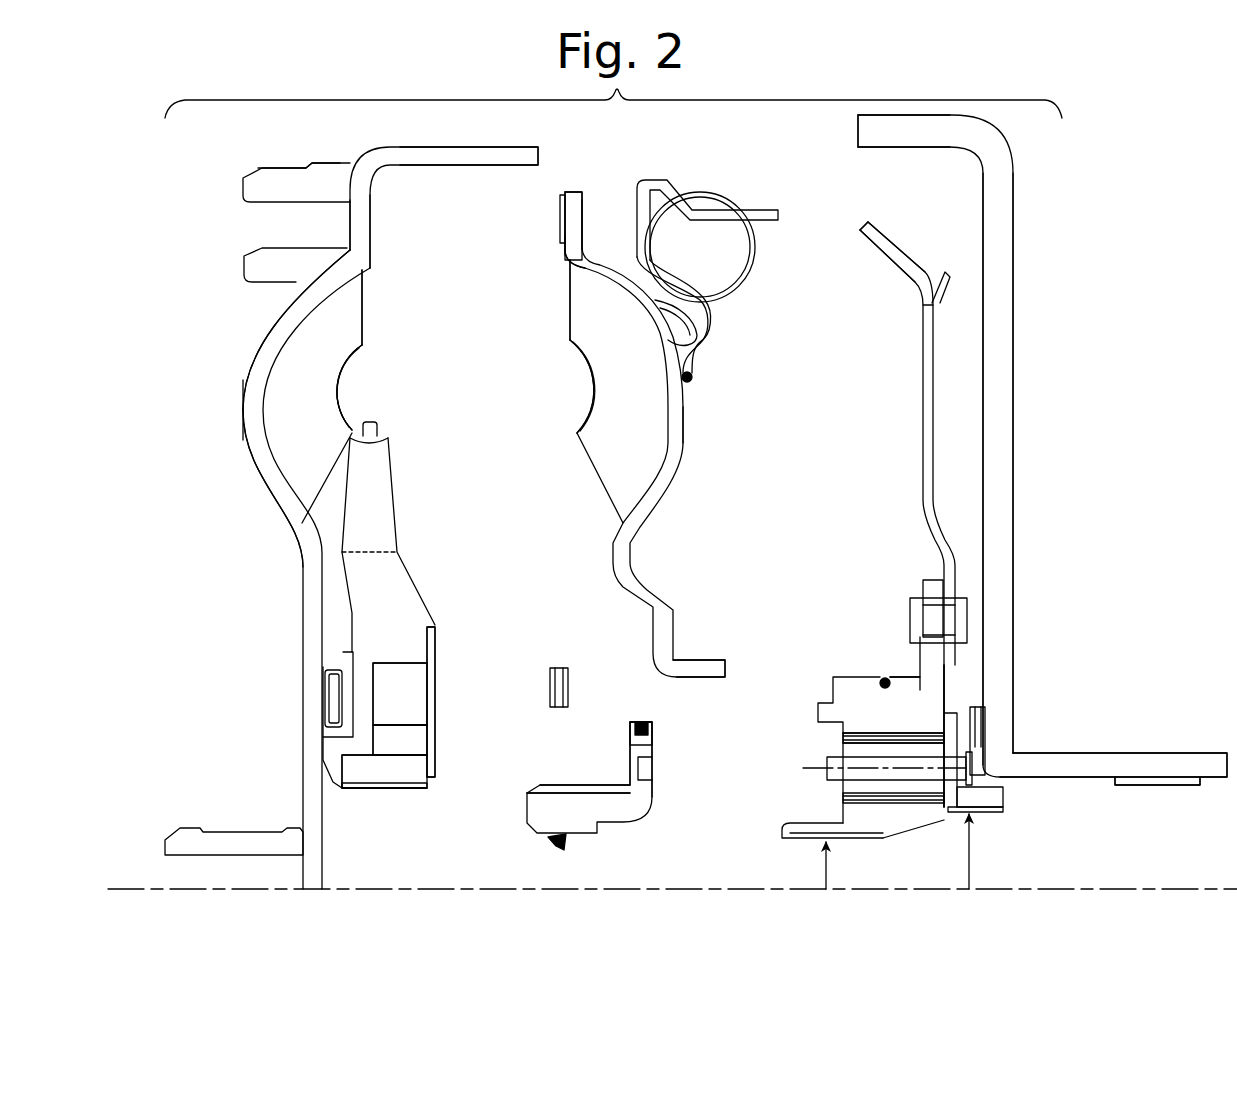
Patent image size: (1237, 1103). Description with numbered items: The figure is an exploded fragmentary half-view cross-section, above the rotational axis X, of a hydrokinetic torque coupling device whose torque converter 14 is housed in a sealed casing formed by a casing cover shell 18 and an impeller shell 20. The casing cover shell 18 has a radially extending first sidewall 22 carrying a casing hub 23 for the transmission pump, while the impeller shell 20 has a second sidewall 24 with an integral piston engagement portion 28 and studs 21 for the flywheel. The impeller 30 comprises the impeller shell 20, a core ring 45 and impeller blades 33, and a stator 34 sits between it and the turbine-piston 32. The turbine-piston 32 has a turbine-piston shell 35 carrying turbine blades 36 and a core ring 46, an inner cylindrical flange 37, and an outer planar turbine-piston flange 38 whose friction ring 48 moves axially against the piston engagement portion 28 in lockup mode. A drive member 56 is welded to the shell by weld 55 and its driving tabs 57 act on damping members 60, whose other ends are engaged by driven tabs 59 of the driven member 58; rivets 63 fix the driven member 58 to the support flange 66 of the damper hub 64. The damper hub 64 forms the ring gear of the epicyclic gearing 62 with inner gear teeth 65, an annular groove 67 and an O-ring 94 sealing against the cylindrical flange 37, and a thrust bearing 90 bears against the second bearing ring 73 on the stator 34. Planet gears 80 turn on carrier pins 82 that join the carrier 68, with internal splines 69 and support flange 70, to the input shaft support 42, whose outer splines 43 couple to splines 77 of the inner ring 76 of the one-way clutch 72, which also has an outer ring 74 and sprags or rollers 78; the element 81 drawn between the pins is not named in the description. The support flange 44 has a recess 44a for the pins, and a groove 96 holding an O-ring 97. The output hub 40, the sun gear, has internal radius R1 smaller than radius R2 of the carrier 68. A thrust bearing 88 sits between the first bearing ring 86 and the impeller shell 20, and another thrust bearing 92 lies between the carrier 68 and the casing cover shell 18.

The torque converter 14 is at (246, 356).
The casing cover shell 18 is at (1016, 373).
The impeller shell 20 is at (256, 489).
The studs 21 is at (283, 170).
The first sidewall 22 is at (1000, 290).
The casing hub 23 is at (1154, 751).
The second sidewall 24 is at (278, 318).
The piston engagement portion 28 is at (350, 228).
The impeller 30 is at (242, 400).
The turbine-piston 32 is at (680, 490).
The impeller blades 33 is at (329, 333).
The stator 34 is at (398, 500).
The turbine-piston shell 35 is at (685, 440).
The turbine blades 36 is at (603, 328).
The cylindrical flange 37 is at (700, 662).
The turbine-piston flange 38 is at (572, 195).
The output hub 40 is at (900, 828).
The input shaft support 42 is at (607, 822).
The outer splines 43 is at (576, 786).
The support flange 44 is at (645, 742).
The recess 44a is at (648, 773).
The core ring 45 is at (345, 390).
The core ring 46 is at (588, 393).
The friction ring 48 is at (565, 247).
The weld 55 is at (694, 377).
The drive member 56 is at (707, 318).
The driving tabs 57 is at (718, 218).
The driven member 58 is at (935, 512).
The driven tabs 59 is at (895, 257).
The damping members 60 is at (748, 280).
The epicyclic gearing 62 is at (960, 702).
The rivets 63 is at (960, 620).
The damper hub 64 is at (848, 673).
The radially inner gear teeth 65 is at (860, 740).
The support flange 66 is at (930, 590).
The annular groove 67 is at (893, 688).
The carrier 68 is at (990, 797).
The internal splines 69 is at (990, 812).
The support flange 70 is at (975, 732).
The one-way clutch 72 is at (430, 690).
The second bearing ring 73 is at (432, 640).
The outer ring 74 is at (400, 694).
The inner ring 76 is at (403, 789).
The splines 77 is at (361, 789).
The sprags or rollers 78 is at (400, 740).
The planet gears 80 is at (930, 780).
The bolt 81 is at (810, 768).
The carrier pins 82 is at (855, 740).
The first bearing ring 86 is at (348, 668).
The thrust bearing 88 is at (334, 702).
The thrust bearing 90 is at (558, 675).
The thrust bearing 92 is at (980, 715).
The O-ring 94 is at (884, 677).
The annular groove 96 is at (648, 728).
The O-ring 97 is at (638, 722).
The internal radius R1 is at (827, 870).
The internal radius R2 is at (970, 856).
The rotational axis X is at (126, 889).